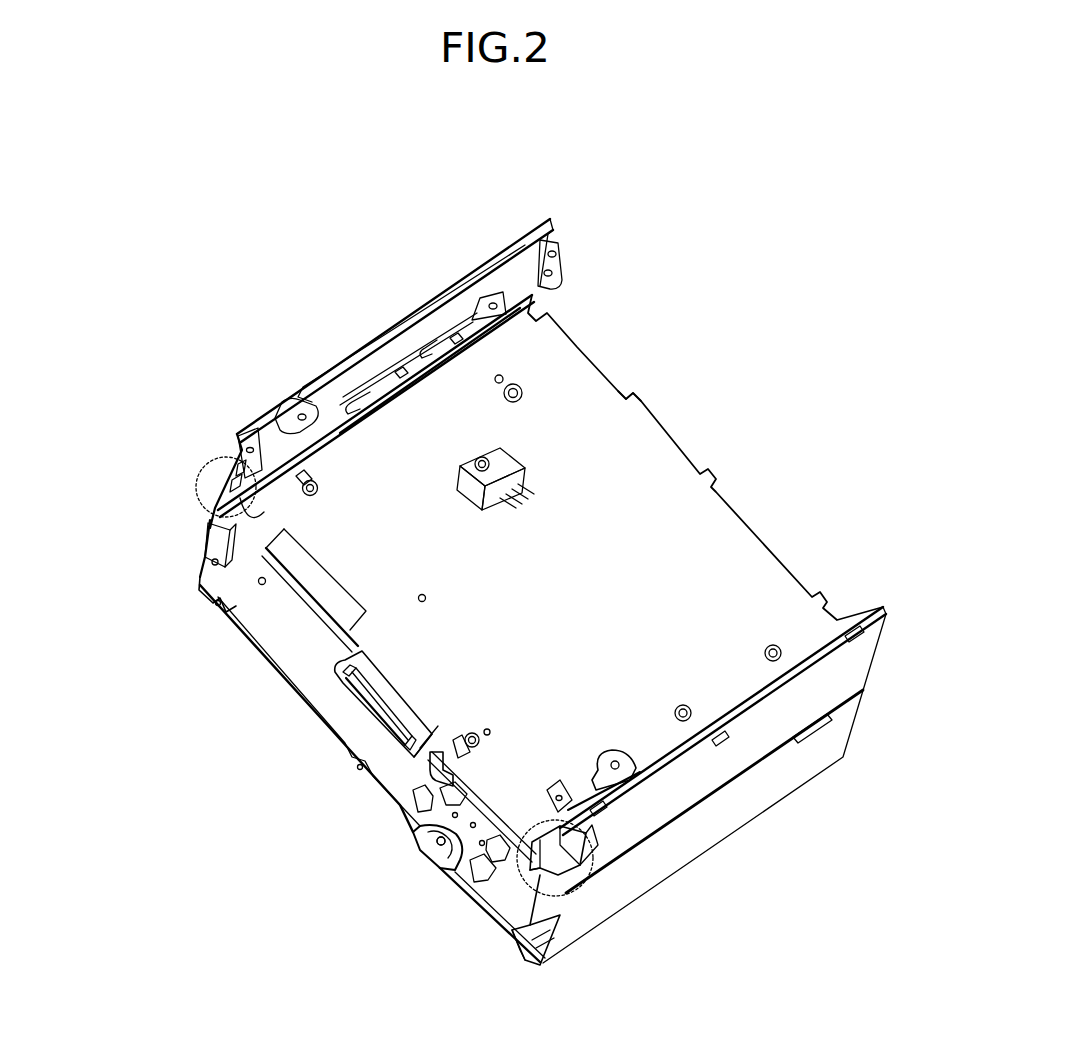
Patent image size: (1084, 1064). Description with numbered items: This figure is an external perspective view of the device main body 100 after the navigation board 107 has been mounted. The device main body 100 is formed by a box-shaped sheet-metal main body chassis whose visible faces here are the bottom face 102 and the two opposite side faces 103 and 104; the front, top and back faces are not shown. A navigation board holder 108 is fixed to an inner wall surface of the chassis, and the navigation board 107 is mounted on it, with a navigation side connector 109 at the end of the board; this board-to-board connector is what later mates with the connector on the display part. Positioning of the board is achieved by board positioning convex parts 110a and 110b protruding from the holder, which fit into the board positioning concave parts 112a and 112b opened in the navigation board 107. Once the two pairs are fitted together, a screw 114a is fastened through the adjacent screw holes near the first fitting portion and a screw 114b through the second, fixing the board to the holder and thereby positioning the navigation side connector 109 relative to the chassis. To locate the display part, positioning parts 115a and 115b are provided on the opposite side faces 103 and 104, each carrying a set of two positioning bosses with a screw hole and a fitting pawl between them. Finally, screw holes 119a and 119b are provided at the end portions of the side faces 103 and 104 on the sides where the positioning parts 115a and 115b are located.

The device main body 100 is at (668, 236).
The bottom face 102 is at (387, 775).
The side face 103 is at (405, 342).
The side face 104 is at (720, 815).
The navigation board 107 is at (377, 635).
The navigation board holder 108 is at (300, 592).
The navigation side connector 109 is at (387, 695).
The board positioning convex part 110a is at (503, 380).
The board positioning convex part 110b is at (455, 850).
The board positioning concave part 112a is at (513, 393).
The board positioning concave part 112b is at (441, 841).
The screw 114a is at (522, 391).
The screw 114b is at (443, 787).
The positioning part 115a is at (228, 457).
The positioning part 115b is at (580, 893).
The screw hole 119a is at (207, 560).
The screw hole 119b is at (540, 950).